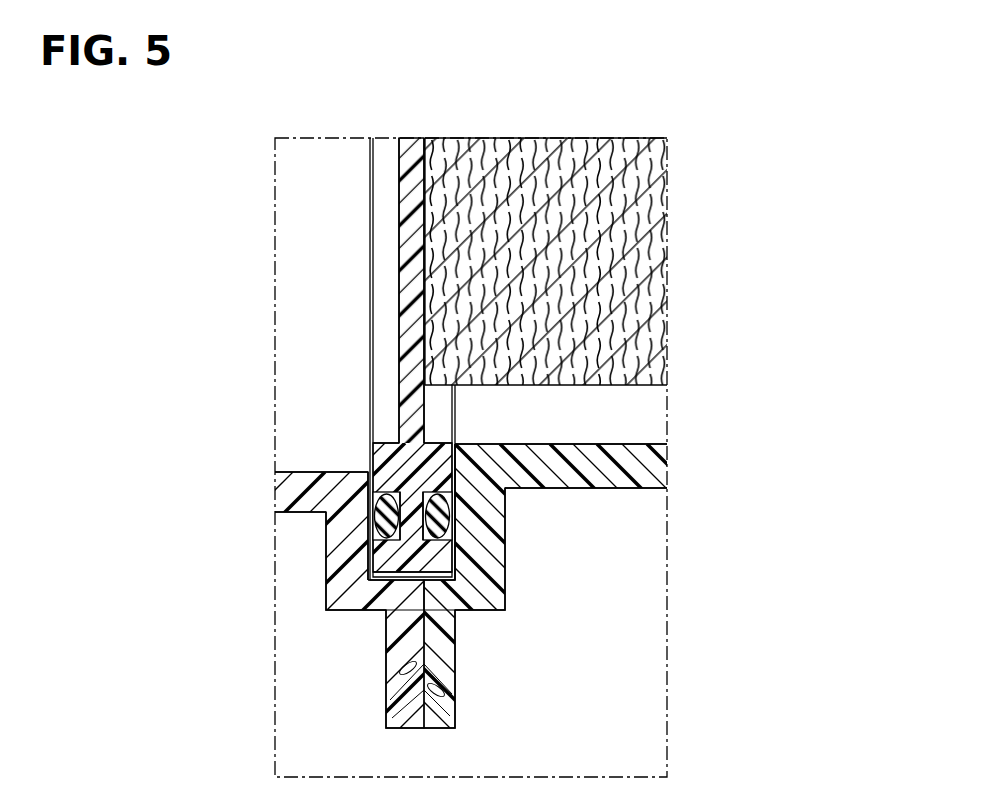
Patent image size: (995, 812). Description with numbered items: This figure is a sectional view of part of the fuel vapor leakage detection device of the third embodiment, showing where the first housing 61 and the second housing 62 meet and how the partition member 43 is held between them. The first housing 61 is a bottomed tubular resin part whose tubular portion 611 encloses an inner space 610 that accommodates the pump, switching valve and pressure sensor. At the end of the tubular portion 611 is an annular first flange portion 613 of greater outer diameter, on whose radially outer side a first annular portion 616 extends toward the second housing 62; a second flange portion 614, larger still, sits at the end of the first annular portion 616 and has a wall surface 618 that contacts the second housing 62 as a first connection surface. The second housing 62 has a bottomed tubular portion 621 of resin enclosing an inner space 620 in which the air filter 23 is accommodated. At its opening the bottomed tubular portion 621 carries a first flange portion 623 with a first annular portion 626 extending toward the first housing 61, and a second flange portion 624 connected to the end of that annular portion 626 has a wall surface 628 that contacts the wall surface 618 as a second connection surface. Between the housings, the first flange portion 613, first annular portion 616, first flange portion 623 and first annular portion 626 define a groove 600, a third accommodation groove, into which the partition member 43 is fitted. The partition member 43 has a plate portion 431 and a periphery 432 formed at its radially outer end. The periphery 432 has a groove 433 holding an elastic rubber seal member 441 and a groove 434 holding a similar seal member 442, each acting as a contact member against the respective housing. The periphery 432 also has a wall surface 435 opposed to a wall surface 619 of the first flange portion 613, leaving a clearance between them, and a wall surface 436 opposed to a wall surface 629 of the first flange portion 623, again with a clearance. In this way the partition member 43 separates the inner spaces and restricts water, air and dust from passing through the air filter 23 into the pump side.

The air filter 23 is at (667, 240).
The partition member 43 is at (376, 345).
The plate portion 431 is at (413, 288).
The periphery 432 is at (393, 460).
The groove 433 is at (372, 505).
The groove 434 is at (458, 500).
The wall surface 435 is at (374, 545).
The wall surface 436 is at (451, 556).
The seal member 441 is at (375, 520).
The seal member 442 is at (450, 516).
The first housing 61 is at (346, 553).
The second housing 62 is at (548, 548).
The groove 600 is at (346, 596).
The inner space 610 is at (300, 328).
The tubular portion 611 is at (300, 481).
The first flange portion 613 is at (348, 580).
The second flange portion 614 is at (393, 668).
The first annular portion 616 is at (383, 593).
The wall surface 618 is at (390, 700).
The wall surface 619 is at (383, 562).
The inner space 620 is at (622, 432).
The bottomed tubular portion 621 is at (667, 462).
The first flange portion 623 is at (478, 540).
The second flange portion 624 is at (440, 690).
The first annular portion 626 is at (487, 612).
The wall surface 628 is at (440, 668).
The wall surface 629 is at (480, 595).